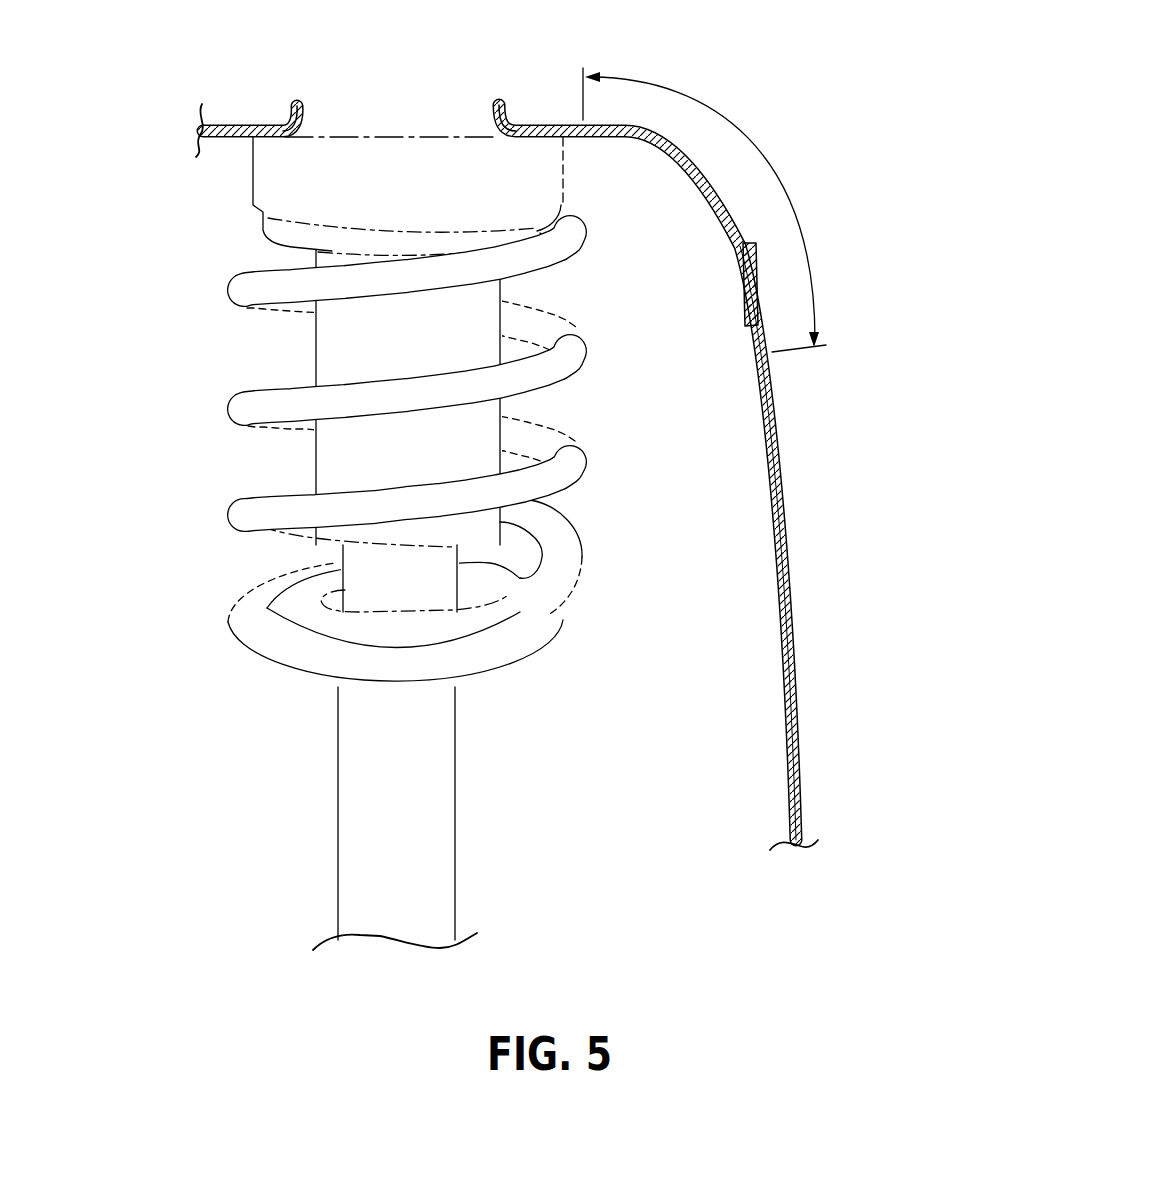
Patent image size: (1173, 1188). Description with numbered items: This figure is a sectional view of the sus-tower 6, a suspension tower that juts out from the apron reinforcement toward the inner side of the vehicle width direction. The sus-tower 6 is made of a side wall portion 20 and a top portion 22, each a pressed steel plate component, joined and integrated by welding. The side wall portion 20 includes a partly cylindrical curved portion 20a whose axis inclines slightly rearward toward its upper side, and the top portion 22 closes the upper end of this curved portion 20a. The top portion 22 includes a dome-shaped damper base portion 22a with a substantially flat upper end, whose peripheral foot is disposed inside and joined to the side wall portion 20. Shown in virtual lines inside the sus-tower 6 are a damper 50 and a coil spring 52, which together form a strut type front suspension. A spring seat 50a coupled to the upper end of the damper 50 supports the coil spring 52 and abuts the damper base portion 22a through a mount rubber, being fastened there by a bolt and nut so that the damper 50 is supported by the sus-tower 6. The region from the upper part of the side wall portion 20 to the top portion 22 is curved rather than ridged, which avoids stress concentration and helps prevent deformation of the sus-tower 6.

The sus-tower 6 is at (592, 425).
The top portion 22 is at (511, 420).
The damper base portion 22a is at (260, 128).
The side wall portion 20 is at (864, 546).
The curved portion 20a is at (778, 418).
The damper 50 is at (323, 543).
The spring seat 50a is at (290, 185).
The coil spring 52 is at (248, 512).